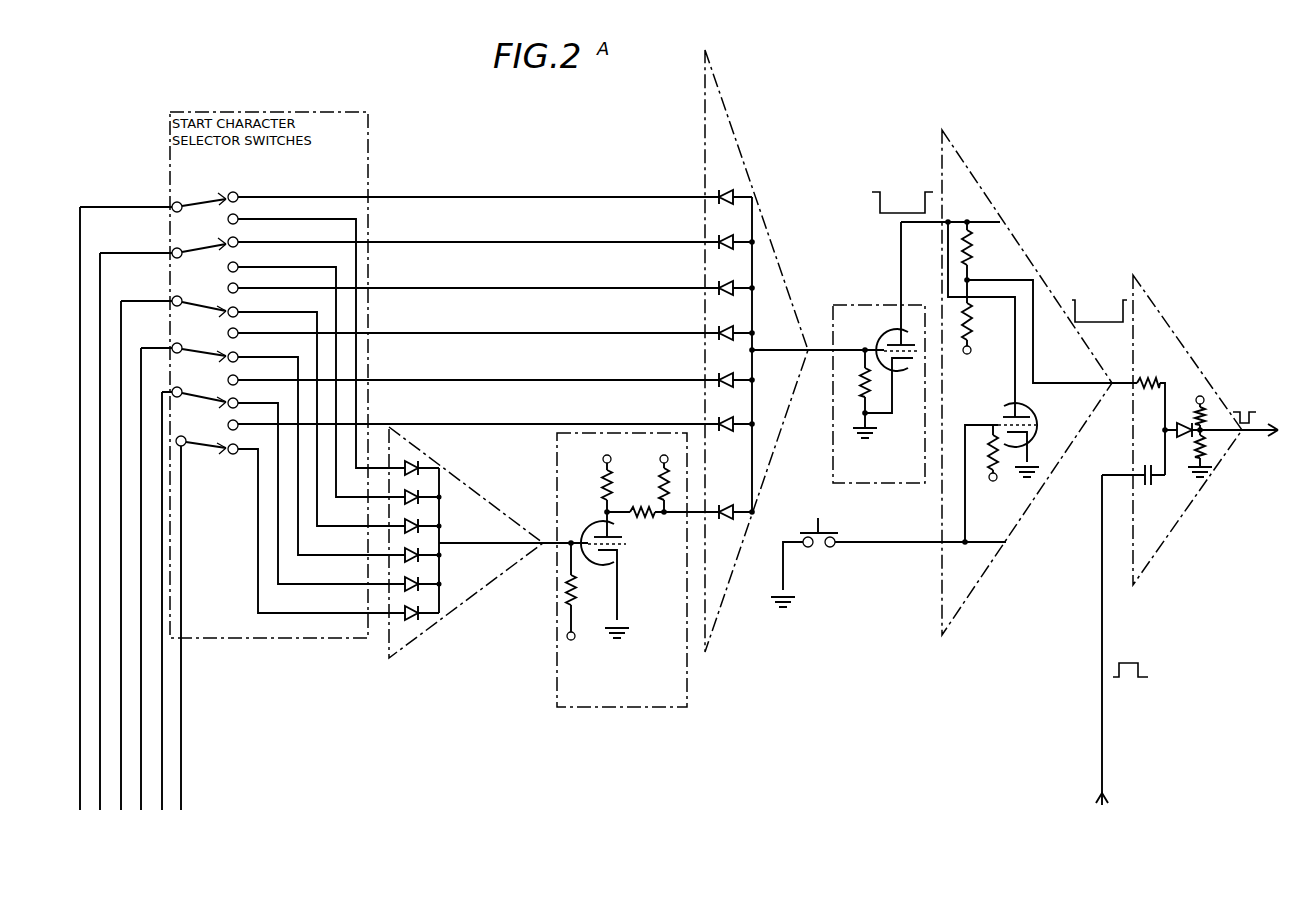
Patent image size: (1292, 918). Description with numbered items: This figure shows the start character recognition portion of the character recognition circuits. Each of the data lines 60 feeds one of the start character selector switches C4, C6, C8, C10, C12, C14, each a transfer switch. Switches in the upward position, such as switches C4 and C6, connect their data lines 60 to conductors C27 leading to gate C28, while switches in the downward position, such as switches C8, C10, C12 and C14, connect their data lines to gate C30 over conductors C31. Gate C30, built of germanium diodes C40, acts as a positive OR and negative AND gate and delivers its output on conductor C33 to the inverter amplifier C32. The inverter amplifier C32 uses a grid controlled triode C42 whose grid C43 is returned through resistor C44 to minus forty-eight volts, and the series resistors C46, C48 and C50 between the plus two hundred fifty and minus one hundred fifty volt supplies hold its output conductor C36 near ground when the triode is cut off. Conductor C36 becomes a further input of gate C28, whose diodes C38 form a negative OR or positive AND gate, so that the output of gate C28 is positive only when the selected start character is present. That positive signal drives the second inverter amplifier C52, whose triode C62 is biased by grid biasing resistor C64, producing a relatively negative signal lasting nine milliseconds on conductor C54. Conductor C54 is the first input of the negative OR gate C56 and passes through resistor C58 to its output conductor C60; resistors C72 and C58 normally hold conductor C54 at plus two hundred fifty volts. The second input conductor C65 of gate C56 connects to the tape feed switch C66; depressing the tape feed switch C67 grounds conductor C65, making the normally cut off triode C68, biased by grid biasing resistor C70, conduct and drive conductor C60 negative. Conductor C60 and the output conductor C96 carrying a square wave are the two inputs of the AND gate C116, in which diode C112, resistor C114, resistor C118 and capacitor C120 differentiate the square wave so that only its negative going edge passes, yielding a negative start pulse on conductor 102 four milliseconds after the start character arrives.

The start selector switch C4 is at (225, 191).
The start selector switch C6 is at (224, 238).
The start selector switch C8 is at (228, 308).
The start selector switch C10 is at (230, 354).
The start selector switch C12 is at (230, 399).
The start selector switch C14 is at (230, 445).
The data lines 60 is at (202, 733).
The conductors C27 is at (590, 189).
The gate C28 is at (727, 112).
The gate C30 is at (480, 492).
The conductors C31 is at (250, 584).
The inverter amplifier C32 is at (649, 582).
The conductor C33 is at (552, 545).
The conductor C36 is at (674, 515).
The diodes C38 is at (727, 192).
The diodes C40 is at (415, 461).
The grid controlled triode C42 is at (622, 560).
The grid C43 is at (612, 548).
The resistor C44 is at (576, 588).
The resistor C46 is at (603, 488).
The resistor C48 is at (645, 505).
The resistor C50 is at (658, 480).
The second inverter amplifier C52 is at (862, 303).
The conductor C54 is at (901, 227).
The negative OR gate C56 is at (1037, 268).
The resistor C58 is at (971, 252).
The output conductor C60 is at (1122, 387).
The triode C62 is at (908, 382).
The grid biasing resistor C64 is at (862, 397).
The second input conductor C65 is at (916, 545).
The tape feed switch C66 is at (829, 550).
The tape feed switch C67 is at (812, 526).
The triode C68 is at (1002, 412).
The grid biasing resistor C70 is at (1003, 490).
The resistor C72 is at (974, 319).
The output conductor C96 is at (1102, 738).
The conductor 102 is at (1257, 423).
The diode C112 is at (1188, 440).
The resistor C114 is at (1210, 408).
The AND gate C116 is at (1190, 352).
The resistor C118 is at (1210, 455).
The capacitor C120 is at (1148, 490).